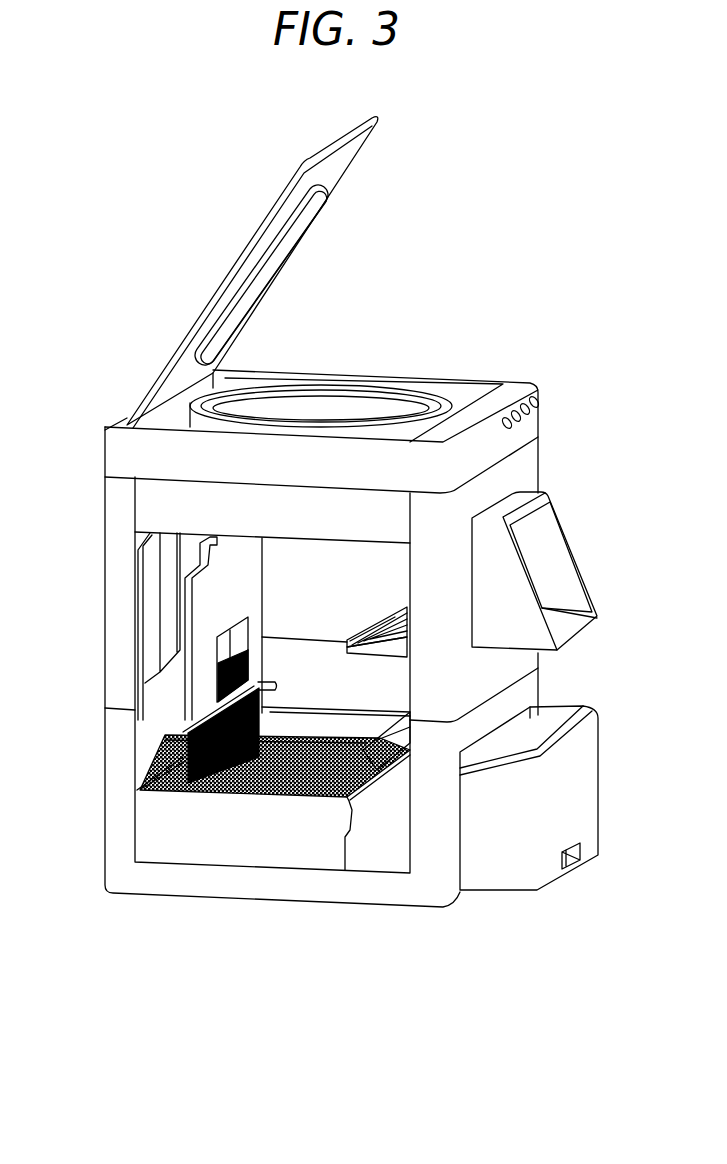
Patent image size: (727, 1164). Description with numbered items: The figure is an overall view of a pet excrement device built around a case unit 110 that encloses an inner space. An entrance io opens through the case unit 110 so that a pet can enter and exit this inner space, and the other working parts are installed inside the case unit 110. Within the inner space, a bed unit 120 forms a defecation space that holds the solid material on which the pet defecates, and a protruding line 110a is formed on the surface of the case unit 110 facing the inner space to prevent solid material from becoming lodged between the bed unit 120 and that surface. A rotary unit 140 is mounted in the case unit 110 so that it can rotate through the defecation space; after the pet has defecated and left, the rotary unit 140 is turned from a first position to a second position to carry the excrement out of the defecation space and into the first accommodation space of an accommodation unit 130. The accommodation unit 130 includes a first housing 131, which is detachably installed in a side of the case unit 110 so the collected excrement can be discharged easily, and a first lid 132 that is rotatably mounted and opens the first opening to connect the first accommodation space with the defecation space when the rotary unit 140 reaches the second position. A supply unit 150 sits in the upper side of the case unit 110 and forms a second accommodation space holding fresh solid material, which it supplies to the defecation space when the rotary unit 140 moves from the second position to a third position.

The case unit 110 is at (177, 885).
The protruding line 110a is at (150, 758).
The bed unit 120 is at (170, 827).
The accommodation unit 130 is at (474, 862).
The first housing 131 is at (493, 852).
The first lid 132 is at (362, 800).
The rotary unit 140 is at (193, 700).
The supply unit 150 is at (360, 412).
The entrance io is at (556, 575).